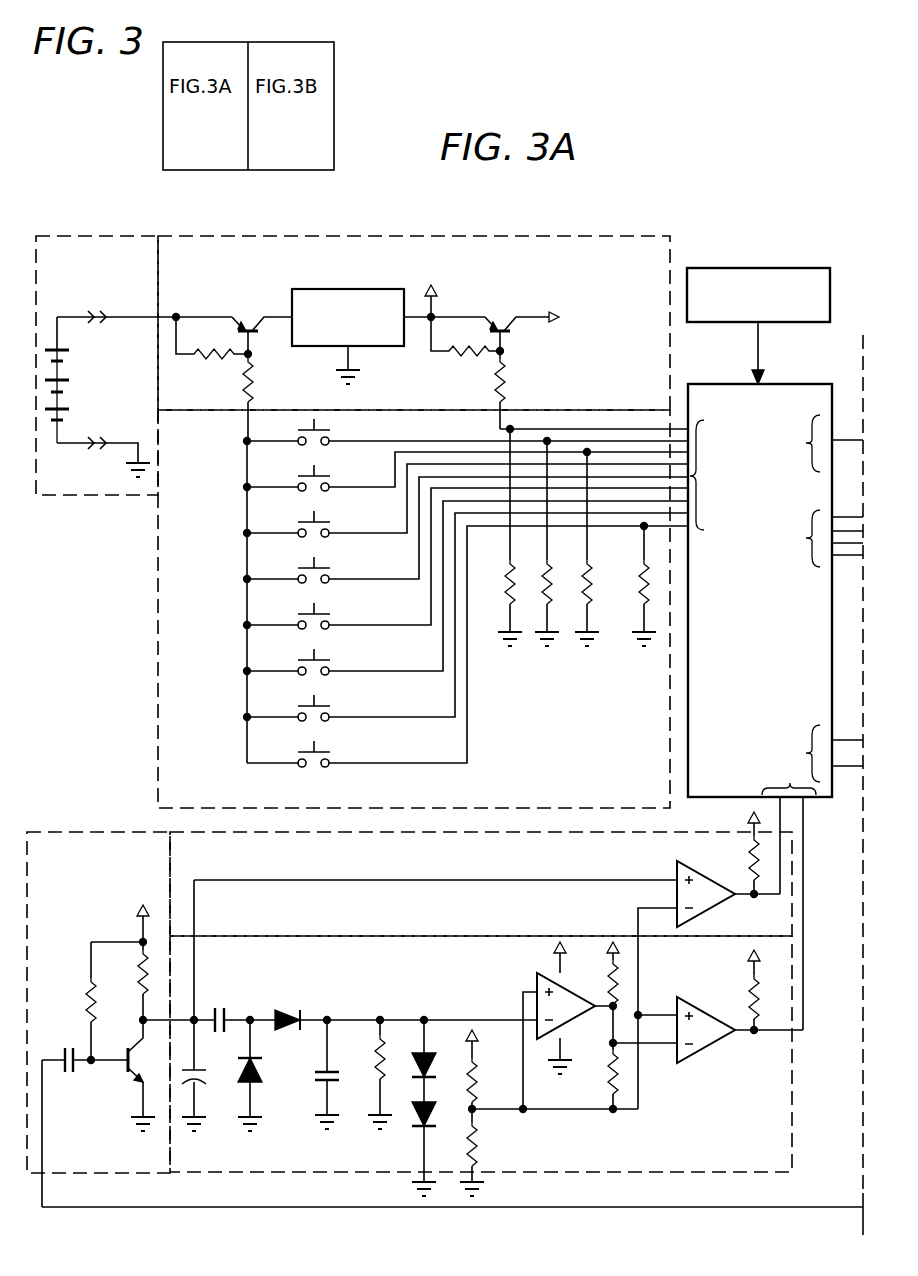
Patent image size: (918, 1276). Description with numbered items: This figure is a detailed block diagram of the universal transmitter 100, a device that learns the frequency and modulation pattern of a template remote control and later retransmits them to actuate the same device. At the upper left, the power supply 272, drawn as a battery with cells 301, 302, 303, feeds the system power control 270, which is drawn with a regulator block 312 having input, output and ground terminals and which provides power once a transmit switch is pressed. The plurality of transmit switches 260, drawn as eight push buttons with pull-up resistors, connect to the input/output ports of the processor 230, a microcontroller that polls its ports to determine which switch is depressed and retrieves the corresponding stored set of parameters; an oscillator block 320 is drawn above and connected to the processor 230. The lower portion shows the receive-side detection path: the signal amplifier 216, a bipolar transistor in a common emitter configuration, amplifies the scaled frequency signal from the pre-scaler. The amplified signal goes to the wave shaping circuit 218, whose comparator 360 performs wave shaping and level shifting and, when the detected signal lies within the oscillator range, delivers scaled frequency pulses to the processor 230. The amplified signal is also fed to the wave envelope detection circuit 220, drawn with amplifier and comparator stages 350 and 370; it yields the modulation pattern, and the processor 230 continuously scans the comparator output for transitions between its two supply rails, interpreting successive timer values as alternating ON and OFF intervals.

The universal transmitter 100 is at (688, 170).
The power supply 272 is at (60, 240).
The battery cell 301 is at (70, 355).
The battery cell 302 is at (70, 384).
The battery cell 303 is at (70, 413).
The system power control circuit 270 is at (478, 238).
The voltage regulator 312 is at (395, 347).
The plurality of transmit switches 260 is at (156, 735).
The oscillator 320 is at (718, 270).
The processor 230 is at (772, 384).
The signal amplifier 216 is at (40, 832).
The wave shaping circuit 218 is at (512, 862).
The wave shaping comparator circuit 360 is at (702, 878).
The operational amplifier 350 is at (548, 976).
The comparator 370 is at (700, 1046).
The wave envelope detection circuit 220 is at (660, 1173).